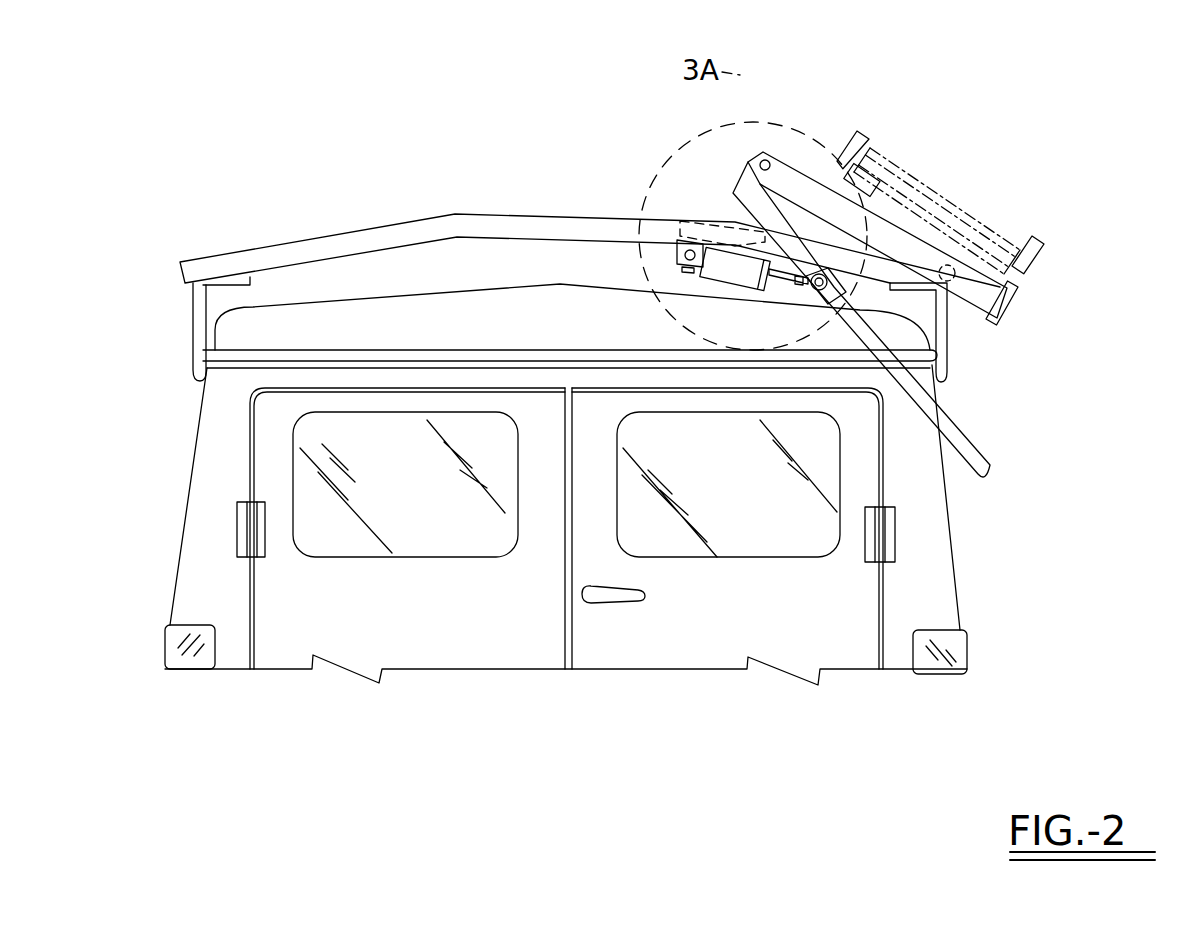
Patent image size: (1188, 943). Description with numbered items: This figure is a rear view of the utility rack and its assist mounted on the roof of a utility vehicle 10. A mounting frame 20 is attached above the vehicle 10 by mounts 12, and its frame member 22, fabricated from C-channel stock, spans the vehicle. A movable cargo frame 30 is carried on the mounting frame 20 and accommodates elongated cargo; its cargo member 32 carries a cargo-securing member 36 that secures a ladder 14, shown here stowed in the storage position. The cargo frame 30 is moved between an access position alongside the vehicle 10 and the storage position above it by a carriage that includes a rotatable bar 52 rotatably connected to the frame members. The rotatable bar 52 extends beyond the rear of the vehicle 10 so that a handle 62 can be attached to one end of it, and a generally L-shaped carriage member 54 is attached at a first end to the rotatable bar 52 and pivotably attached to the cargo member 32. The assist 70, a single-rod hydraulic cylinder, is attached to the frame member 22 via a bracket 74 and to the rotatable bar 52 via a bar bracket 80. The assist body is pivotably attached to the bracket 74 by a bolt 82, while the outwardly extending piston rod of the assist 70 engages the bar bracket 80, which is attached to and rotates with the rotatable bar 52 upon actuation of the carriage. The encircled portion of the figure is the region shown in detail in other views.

The utility vehicle 10 is at (186, 477).
The mounts 12 is at (190, 318).
The ladder 14 is at (1046, 262).
The mounting frame 20 is at (358, 228).
The frame member 22 is at (540, 214).
The cargo frame 30 is at (790, 162).
The cargo member 32 is at (1010, 302).
The cargo-securing member 36 is at (880, 162).
The rotatable bar 52 is at (842, 302).
The carriage member 54 is at (756, 176).
The handle 62 is at (998, 478).
The assist 70 is at (740, 280).
The bracket 74 is at (684, 235).
The bar bracket 80 is at (818, 292).
The bolt 82 is at (680, 256).